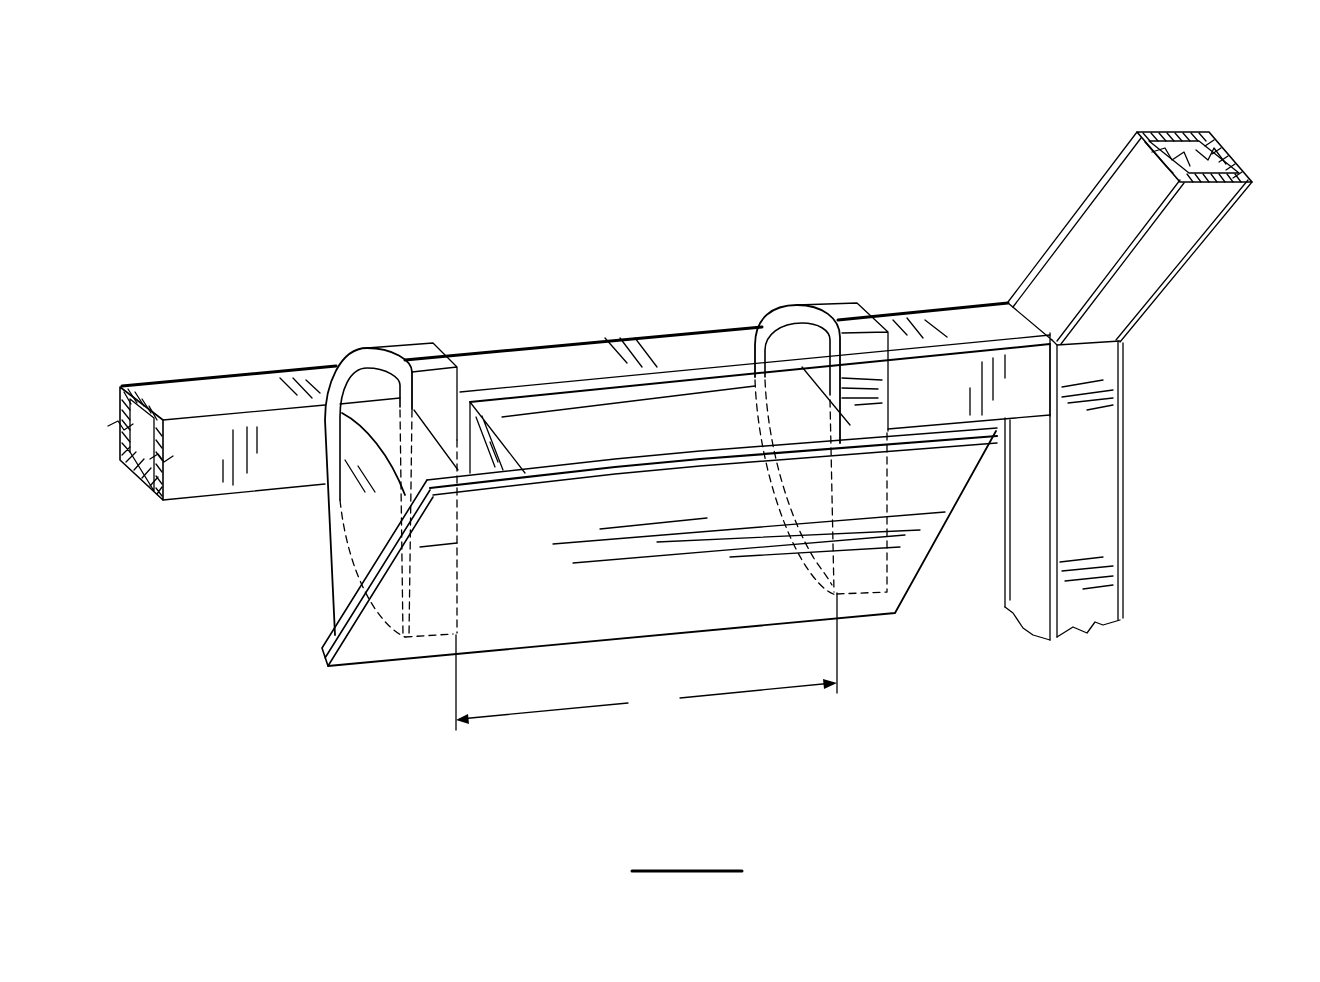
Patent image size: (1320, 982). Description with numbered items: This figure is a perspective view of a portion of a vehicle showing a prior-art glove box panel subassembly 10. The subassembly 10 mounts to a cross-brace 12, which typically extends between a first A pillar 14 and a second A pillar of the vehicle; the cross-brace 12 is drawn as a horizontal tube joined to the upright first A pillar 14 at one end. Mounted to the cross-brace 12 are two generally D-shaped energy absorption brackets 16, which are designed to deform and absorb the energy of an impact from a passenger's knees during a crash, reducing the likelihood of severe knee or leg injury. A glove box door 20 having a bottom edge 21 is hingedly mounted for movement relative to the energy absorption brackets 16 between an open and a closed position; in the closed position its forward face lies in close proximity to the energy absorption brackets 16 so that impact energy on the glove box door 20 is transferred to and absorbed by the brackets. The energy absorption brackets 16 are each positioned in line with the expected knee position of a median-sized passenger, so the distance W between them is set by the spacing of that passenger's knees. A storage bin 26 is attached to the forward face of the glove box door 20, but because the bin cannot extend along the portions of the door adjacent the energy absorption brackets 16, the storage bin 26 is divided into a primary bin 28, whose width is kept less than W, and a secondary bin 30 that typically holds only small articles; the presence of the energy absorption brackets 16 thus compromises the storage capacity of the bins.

The glove box panel subassembly 10 is at (914, 242).
The cross-brace 12 is at (204, 379).
The first A pillar 14 is at (1102, 180).
The energy absorption brackets 16 is at (384, 346).
The glove box door 20 is at (351, 648).
The bottom edge 21 is at (878, 618).
The storage bin 26 is at (370, 167).
The primary bin 28 is at (498, 400).
The secondary bin 30 is at (362, 408).